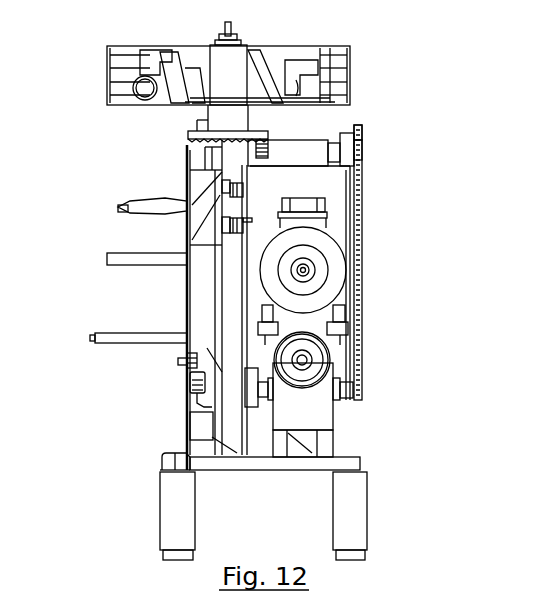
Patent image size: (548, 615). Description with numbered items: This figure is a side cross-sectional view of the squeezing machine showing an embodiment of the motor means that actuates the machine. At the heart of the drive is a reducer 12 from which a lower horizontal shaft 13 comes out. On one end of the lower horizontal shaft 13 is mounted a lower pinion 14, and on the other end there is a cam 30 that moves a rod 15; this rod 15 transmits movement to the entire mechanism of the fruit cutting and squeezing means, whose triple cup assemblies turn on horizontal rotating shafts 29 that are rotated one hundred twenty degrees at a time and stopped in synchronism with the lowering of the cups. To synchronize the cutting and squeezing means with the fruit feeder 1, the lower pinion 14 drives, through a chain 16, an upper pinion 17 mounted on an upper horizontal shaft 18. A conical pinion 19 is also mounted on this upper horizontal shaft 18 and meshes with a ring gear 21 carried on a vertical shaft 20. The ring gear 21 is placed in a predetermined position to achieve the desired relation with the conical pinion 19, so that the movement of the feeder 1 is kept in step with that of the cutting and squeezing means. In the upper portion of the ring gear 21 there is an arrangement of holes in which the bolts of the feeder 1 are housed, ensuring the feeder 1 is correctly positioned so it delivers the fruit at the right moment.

The fruit feeder 1 is at (228, 90).
The reducer 12 is at (308, 412).
The lower horizontal shaft 13 is at (267, 388).
The lower pinion 14 is at (345, 392).
The rod 15 is at (237, 283).
The chain 16 is at (358, 342).
The upper pinion 17 is at (361, 147).
The upper horizontal shaft 18 is at (356, 130).
The conical pinion 19 is at (256, 152).
The vertical shaft 20 is at (222, 32).
The ring gear 21 is at (215, 132).
The rotating shafts of the cup assemblies 29 is at (133, 213).
The cam 30 is at (250, 405).